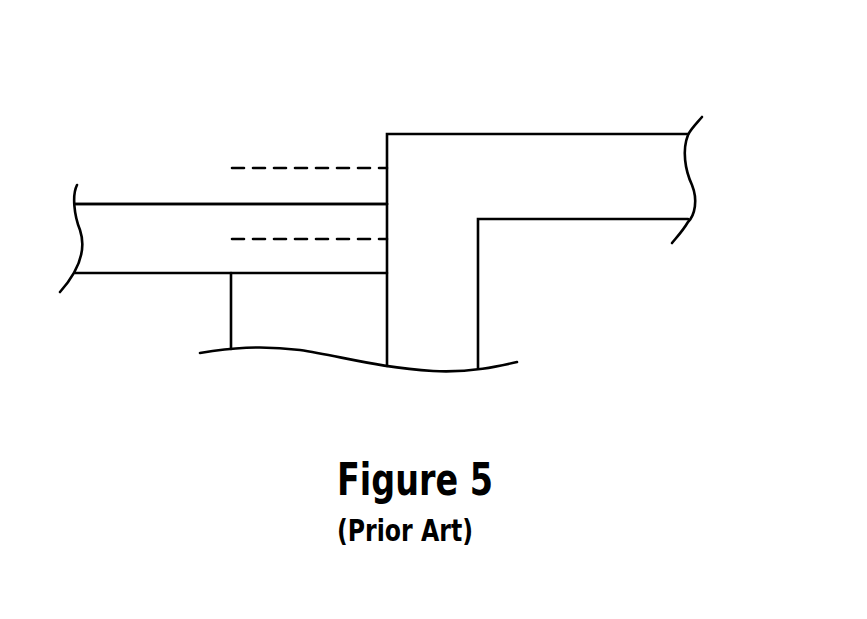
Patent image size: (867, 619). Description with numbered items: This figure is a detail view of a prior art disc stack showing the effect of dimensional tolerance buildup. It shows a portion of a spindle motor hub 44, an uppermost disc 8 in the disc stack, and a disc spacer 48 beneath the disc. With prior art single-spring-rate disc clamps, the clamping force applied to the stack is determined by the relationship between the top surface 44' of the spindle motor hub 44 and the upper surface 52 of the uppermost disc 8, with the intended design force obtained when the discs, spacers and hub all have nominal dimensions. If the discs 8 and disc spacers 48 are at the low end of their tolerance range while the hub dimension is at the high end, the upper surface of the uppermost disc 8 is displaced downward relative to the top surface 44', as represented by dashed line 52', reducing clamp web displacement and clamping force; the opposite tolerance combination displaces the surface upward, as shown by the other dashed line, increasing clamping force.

The uppermost disc 8 is at (135, 253).
The upper surface of the uppermost disc 52 is at (227, 164).
The dashed line representing downward-displaced upper surface 52' is at (286, 159).
The disc spacer 48 is at (293, 338).
The spindle motor hub 44 is at (537, 201).
The top surface of the spindle motor hub 44' is at (704, 136).